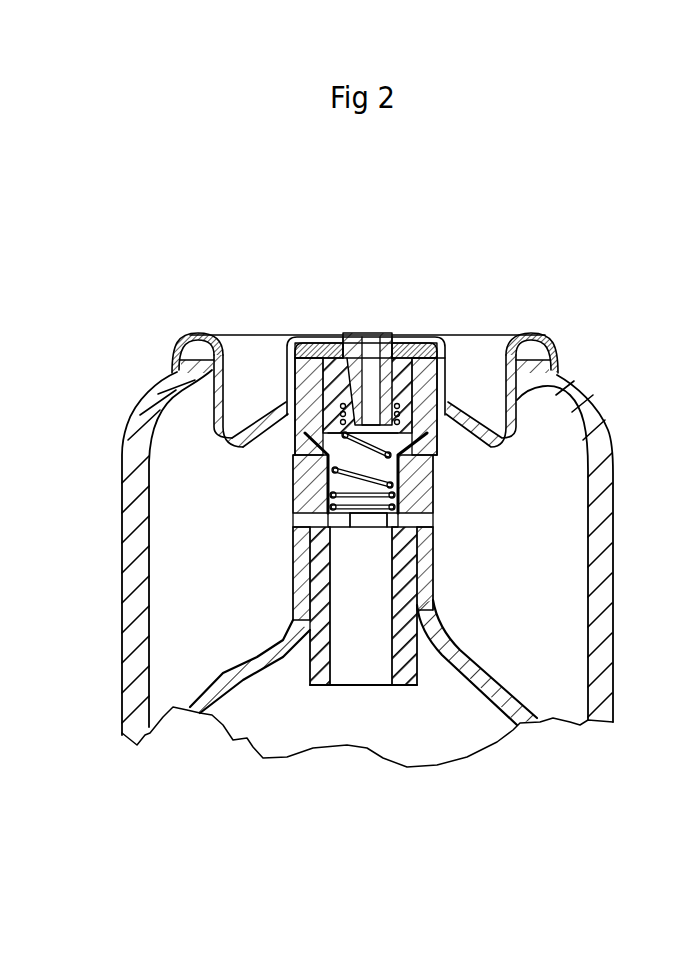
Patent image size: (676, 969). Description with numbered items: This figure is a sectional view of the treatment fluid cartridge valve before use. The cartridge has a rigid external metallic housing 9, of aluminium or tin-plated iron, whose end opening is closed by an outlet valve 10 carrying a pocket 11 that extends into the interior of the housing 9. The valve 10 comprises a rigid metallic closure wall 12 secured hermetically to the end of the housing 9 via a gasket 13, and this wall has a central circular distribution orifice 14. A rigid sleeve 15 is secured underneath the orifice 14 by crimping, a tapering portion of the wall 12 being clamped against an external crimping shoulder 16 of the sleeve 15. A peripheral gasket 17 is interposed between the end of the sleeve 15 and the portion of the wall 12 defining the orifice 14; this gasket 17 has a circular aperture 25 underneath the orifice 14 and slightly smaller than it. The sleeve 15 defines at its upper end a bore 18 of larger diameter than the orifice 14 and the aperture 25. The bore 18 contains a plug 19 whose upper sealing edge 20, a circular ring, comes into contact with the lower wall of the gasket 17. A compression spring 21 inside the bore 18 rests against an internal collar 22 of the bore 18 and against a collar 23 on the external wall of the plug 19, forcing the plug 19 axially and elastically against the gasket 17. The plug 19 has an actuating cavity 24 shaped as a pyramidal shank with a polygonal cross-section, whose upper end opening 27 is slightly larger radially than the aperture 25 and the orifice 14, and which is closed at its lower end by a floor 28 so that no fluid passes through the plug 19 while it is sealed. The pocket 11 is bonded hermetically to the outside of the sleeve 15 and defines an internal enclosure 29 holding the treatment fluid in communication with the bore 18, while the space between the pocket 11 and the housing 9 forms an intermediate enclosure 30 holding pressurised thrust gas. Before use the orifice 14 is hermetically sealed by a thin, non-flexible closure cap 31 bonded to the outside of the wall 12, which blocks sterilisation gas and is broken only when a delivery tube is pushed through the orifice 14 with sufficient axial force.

The housing 9 is at (600, 552).
The outlet valve 10 is at (266, 236).
The pocket 11 is at (460, 660).
The closure wall 12 is at (552, 402).
The gasket 13 is at (534, 340).
The distribution orifice 14 is at (365, 352).
The sleeve 15 is at (300, 505).
The crimping shoulder 16 is at (283, 415).
The peripheral gasket 17 is at (413, 352).
The bore 18 is at (300, 480).
The plug 19 is at (437, 358).
The sealing edge 20 is at (330, 352).
The compression spring 21 is at (397, 462).
The internal collar 22 is at (423, 528).
The collar 23 is at (239, 358).
The actuating cavity 24 is at (292, 352).
The circular aperture 25 is at (347, 372).
The upper end opening 27 is at (383, 352).
The floor 28 is at (305, 446).
The internal enclosure 29 is at (395, 723).
The intermediate enclosure 30 is at (207, 580).
The hermetic closure cap 31 is at (338, 350).